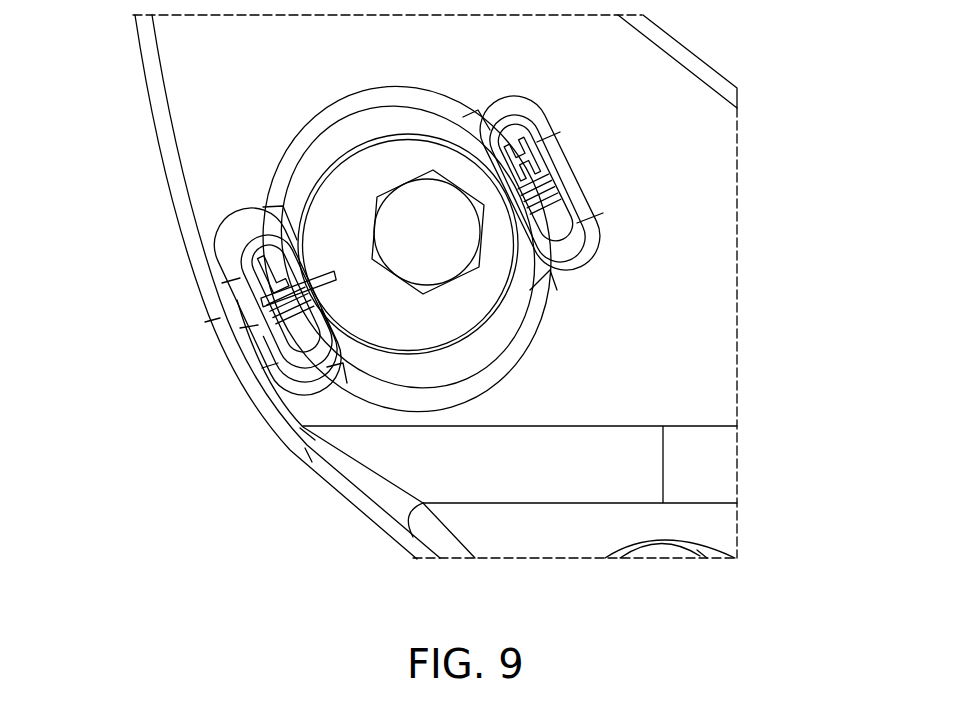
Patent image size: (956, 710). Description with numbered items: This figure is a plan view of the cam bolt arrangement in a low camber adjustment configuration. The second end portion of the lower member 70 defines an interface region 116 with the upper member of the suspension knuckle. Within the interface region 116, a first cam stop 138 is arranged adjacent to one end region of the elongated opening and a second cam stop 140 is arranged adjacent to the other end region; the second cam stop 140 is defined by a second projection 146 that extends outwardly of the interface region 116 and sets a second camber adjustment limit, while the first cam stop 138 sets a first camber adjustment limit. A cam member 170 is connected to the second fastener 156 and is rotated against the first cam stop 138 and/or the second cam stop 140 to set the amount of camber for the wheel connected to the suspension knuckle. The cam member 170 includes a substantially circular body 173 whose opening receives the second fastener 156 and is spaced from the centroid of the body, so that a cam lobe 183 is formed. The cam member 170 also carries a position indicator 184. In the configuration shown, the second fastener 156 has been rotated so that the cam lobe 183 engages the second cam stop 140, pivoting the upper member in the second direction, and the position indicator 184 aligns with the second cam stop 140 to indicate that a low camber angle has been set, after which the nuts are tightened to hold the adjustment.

The lower member 70 is at (132, 117).
The interface region 116 is at (675, 225).
The first cam stop 138 is at (582, 254).
The second cam stop 140 is at (545, 225).
The second projection 146 is at (312, 338).
The second fastener 156 is at (448, 242).
The cam member 170 is at (486, 353).
The substantially circular body 173 is at (397, 163).
The cam lobe 183 is at (263, 209).
The position indicator 184 is at (265, 251).